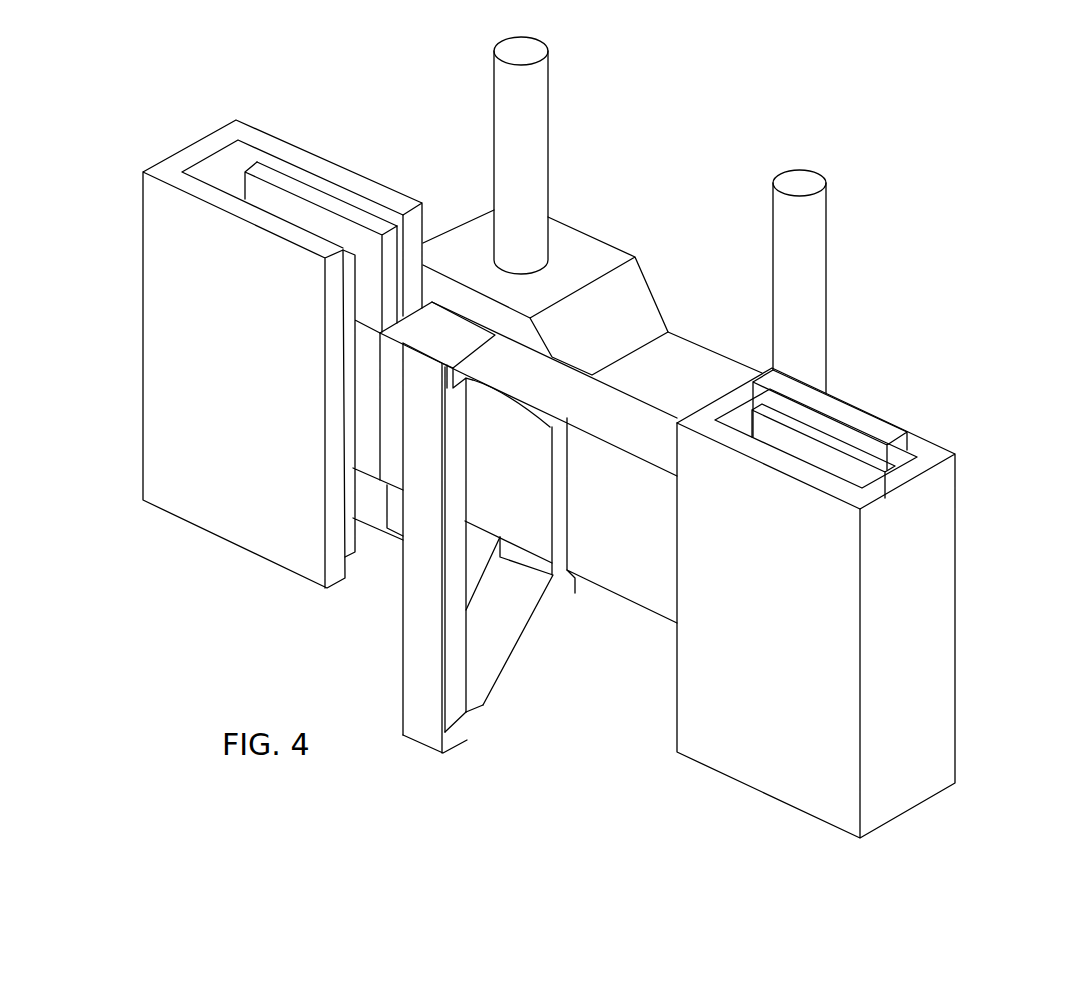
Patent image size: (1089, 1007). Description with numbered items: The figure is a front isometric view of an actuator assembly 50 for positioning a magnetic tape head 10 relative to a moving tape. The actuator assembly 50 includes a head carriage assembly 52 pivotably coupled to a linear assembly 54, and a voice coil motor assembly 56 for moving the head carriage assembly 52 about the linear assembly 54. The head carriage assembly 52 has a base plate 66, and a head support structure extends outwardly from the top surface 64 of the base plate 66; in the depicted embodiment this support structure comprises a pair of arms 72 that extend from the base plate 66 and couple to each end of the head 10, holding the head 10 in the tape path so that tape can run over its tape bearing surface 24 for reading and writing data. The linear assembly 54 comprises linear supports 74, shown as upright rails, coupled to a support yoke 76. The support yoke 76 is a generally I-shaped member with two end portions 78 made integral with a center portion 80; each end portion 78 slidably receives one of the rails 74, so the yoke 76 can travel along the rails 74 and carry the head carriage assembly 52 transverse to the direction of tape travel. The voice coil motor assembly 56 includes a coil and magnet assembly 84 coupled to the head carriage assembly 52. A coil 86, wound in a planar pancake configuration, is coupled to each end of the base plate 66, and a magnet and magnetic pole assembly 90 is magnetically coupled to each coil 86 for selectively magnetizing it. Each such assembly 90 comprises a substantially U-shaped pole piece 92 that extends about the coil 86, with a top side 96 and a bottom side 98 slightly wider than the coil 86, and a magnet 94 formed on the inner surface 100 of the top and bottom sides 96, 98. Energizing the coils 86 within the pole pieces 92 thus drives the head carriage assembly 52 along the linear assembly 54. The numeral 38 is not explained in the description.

The magnetic tape head 10 is at (410, 655).
The tape bearing surface 24 is at (410, 718).
The strut 38 is at (497, 700).
The actuator assembly 50 is at (977, 197).
The head carriage assembly 52 is at (581, 682).
The linear assembly 54 is at (638, 208).
The voice coil motor (VCM) assembly 56 is at (997, 520).
The top surface 64 is at (662, 598).
The base plate 66 is at (606, 514).
The arms 72 is at (566, 605).
The linear supports 74 is at (812, 232).
The support yoke 76 is at (694, 324).
The end portions 78 is at (878, 383).
The center portion 80 is at (653, 352).
The coil and magnet assembly 84 is at (945, 812).
The coil 86 is at (365, 410).
The magnet and magnetic pole assembly 90 is at (140, 380).
The pole piece 92 is at (803, 778).
The magnet 94 is at (318, 212).
The top side 96 is at (792, 488).
The bottom side 98 is at (273, 136).
The inner surface 100 is at (376, 207).